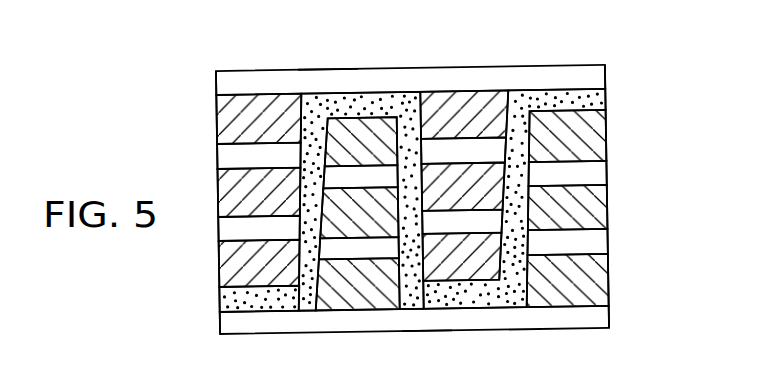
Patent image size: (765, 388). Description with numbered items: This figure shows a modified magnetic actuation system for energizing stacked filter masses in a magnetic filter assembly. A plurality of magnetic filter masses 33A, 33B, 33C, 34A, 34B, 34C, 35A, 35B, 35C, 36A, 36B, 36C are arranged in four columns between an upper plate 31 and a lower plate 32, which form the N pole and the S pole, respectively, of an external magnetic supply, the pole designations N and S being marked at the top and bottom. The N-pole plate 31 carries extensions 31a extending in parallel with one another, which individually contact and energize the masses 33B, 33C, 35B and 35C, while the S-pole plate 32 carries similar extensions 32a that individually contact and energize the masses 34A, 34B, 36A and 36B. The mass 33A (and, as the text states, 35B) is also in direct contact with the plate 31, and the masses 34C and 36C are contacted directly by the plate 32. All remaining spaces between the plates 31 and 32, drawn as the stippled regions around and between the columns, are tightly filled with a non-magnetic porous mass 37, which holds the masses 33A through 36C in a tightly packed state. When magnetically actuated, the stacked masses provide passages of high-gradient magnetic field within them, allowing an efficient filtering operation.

The N-pole plate 31 is at (544, 76).
The S-pole plate 32 is at (255, 328).
The extensions of N-pole plate 31a is at (190, 162).
The extension of S-pole plate 32a is at (617, 220).
The magnetic filter mass 33A is at (259, 119).
The magnetic filter mass 33B is at (259, 192).
The magnetic filter mass 33C is at (260, 263).
The magnetic filter mass 34A is at (361, 141).
The magnetic filter mass 34B is at (358, 212).
The magnetic filter mass 34C is at (357, 284).
The magnetic filter mass 35A is at (464, 114).
The magnetic filter mass 35B is at (463, 187).
The magnetic filter mass 35C is at (463, 257).
The magnetic filter mass 36A is at (567, 136).
The magnetic filter mass 36B is at (567, 207).
The magnetic filter mass 36C is at (567, 280).
The non-magnetic porous mass 37 is at (515, 93).
The N pole N is at (333, 72).
The S pole S is at (426, 326).